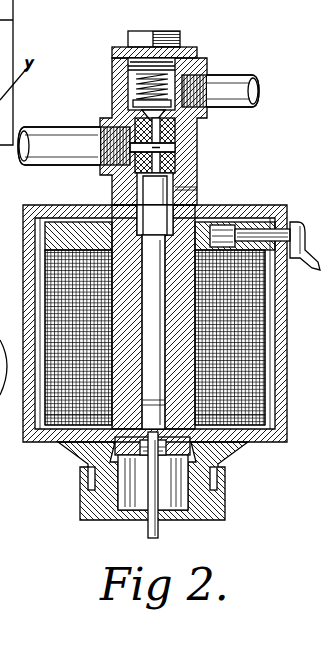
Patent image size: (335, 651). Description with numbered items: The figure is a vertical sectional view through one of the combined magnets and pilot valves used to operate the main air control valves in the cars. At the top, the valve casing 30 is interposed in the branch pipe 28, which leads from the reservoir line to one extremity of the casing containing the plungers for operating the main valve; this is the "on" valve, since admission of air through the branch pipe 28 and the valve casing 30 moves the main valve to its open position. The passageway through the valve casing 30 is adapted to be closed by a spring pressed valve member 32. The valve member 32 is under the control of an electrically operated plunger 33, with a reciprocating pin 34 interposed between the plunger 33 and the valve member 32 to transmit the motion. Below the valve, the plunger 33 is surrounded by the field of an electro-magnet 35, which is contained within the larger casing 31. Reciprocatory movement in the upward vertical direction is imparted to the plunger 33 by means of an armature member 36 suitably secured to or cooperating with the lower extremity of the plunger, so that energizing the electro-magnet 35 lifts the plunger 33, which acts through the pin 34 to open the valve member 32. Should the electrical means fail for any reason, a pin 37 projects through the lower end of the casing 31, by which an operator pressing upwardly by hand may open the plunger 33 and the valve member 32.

The branch pipe 28 is at (232, 78).
The valve casing 30 is at (112, 77).
The electro-magnet casing 31 is at (286, 316).
The spring pressed valve member 32 is at (128, 110).
The electrically operated plunger 33 is at (150, 193).
The reciprocating pin 34 is at (175, 148).
The electro-magnet 35 is at (262, 352).
The armature member 36 is at (200, 452).
The pin 37 is at (160, 532).